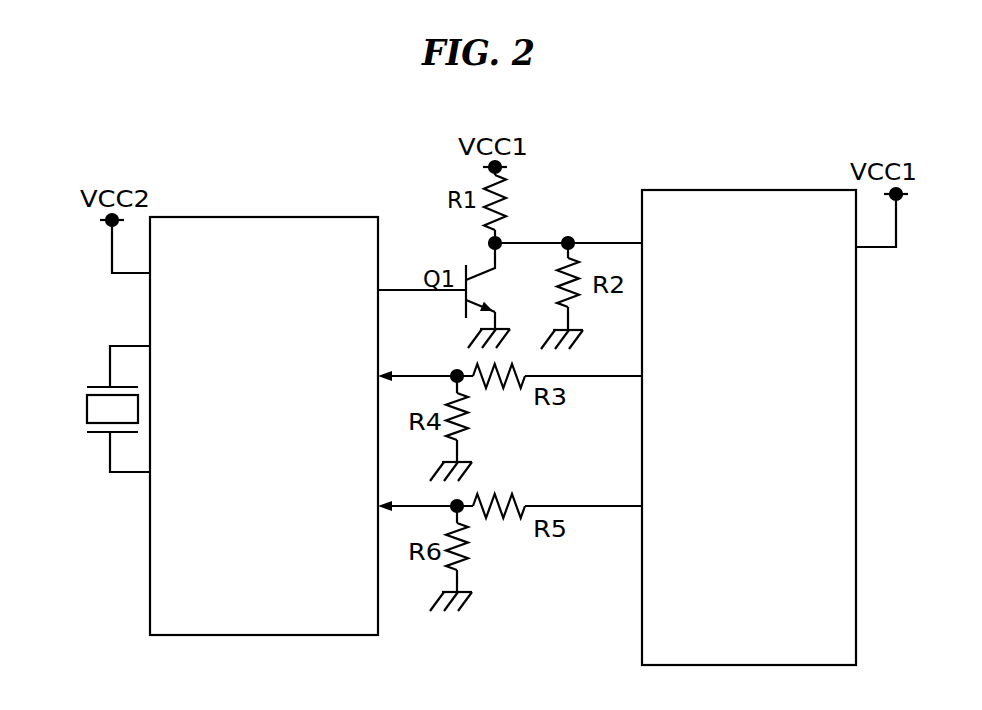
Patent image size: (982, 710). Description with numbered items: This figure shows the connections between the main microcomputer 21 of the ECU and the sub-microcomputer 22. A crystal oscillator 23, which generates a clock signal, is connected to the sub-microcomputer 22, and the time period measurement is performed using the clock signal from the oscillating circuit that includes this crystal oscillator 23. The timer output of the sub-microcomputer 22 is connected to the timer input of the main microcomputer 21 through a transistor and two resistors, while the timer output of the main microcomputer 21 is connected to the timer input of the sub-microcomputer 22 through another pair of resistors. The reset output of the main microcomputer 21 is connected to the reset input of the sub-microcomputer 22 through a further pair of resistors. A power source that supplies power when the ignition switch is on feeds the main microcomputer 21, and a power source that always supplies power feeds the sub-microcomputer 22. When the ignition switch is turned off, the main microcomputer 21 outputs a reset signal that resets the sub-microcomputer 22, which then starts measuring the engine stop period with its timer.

The main microcomputer 21 is at (663, 190).
The sub-microcomputer 22 is at (325, 217).
The crystal oscillator 23 is at (87, 400).